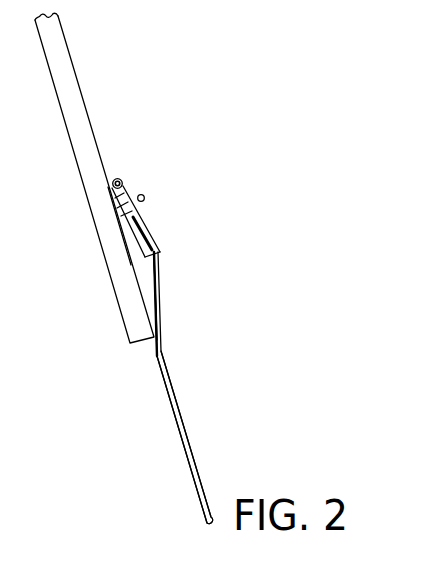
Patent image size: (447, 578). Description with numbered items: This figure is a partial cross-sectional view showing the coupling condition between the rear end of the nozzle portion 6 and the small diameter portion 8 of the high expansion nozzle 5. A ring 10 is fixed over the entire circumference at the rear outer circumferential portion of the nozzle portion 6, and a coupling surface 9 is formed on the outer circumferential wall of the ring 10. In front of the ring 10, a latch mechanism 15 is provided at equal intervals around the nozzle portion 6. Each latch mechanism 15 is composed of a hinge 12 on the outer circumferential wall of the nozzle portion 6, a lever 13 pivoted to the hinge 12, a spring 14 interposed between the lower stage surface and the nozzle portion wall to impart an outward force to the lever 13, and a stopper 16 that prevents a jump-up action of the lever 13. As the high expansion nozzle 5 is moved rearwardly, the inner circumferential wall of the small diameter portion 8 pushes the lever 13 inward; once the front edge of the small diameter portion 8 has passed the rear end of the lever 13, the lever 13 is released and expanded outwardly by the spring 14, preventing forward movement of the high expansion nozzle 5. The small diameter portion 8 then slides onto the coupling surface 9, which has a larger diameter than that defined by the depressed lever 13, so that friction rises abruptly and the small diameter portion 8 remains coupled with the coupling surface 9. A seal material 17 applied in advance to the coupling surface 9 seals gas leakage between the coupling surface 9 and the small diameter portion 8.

The high expansion nozzle 5 is at (181, 421).
The nozzle portion 6 is at (58, 38).
The small diameter portion 8 is at (159, 291).
The coupling surface 9 is at (150, 288).
The ring 10 is at (142, 273).
The hinge 12 is at (122, 179).
The lever 13 is at (141, 225).
The spring 14 is at (122, 237).
The latch mechanism 15 is at (158, 246).
The stopper 16 is at (146, 196).
The seal material 17 is at (150, 303).